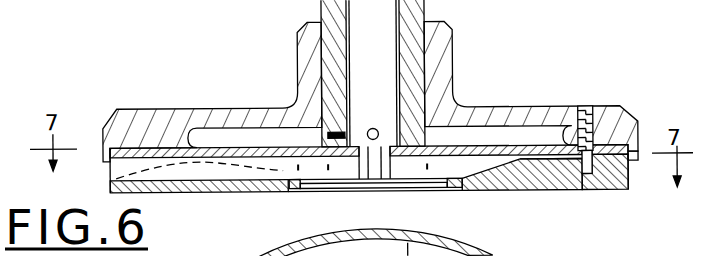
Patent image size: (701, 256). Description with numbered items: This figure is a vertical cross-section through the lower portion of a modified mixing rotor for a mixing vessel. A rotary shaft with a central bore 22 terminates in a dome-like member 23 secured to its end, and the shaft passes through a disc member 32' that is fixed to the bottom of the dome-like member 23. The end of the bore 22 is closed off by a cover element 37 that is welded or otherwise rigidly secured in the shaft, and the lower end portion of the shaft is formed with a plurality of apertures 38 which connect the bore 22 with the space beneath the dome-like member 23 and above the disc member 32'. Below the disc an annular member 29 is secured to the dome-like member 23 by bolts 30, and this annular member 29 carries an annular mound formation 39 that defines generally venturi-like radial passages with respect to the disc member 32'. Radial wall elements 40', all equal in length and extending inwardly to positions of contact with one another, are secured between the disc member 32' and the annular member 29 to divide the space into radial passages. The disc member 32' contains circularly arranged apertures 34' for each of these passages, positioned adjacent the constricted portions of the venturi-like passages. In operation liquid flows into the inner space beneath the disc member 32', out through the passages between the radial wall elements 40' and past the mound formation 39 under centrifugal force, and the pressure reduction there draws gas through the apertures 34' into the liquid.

The bore 22 is at (350, 15).
The dome-like member 23 is at (455, 94).
The annular member 29 is at (540, 178).
The bolts 30 is at (594, 178).
The disc member 32' is at (368, 165).
The apertures 34' is at (615, 125).
The cover element 37 is at (373, 128).
The apertures 38 is at (327, 134).
The annular mound formation 39 is at (537, 166).
The radial wall elements 40' is at (314, 192).